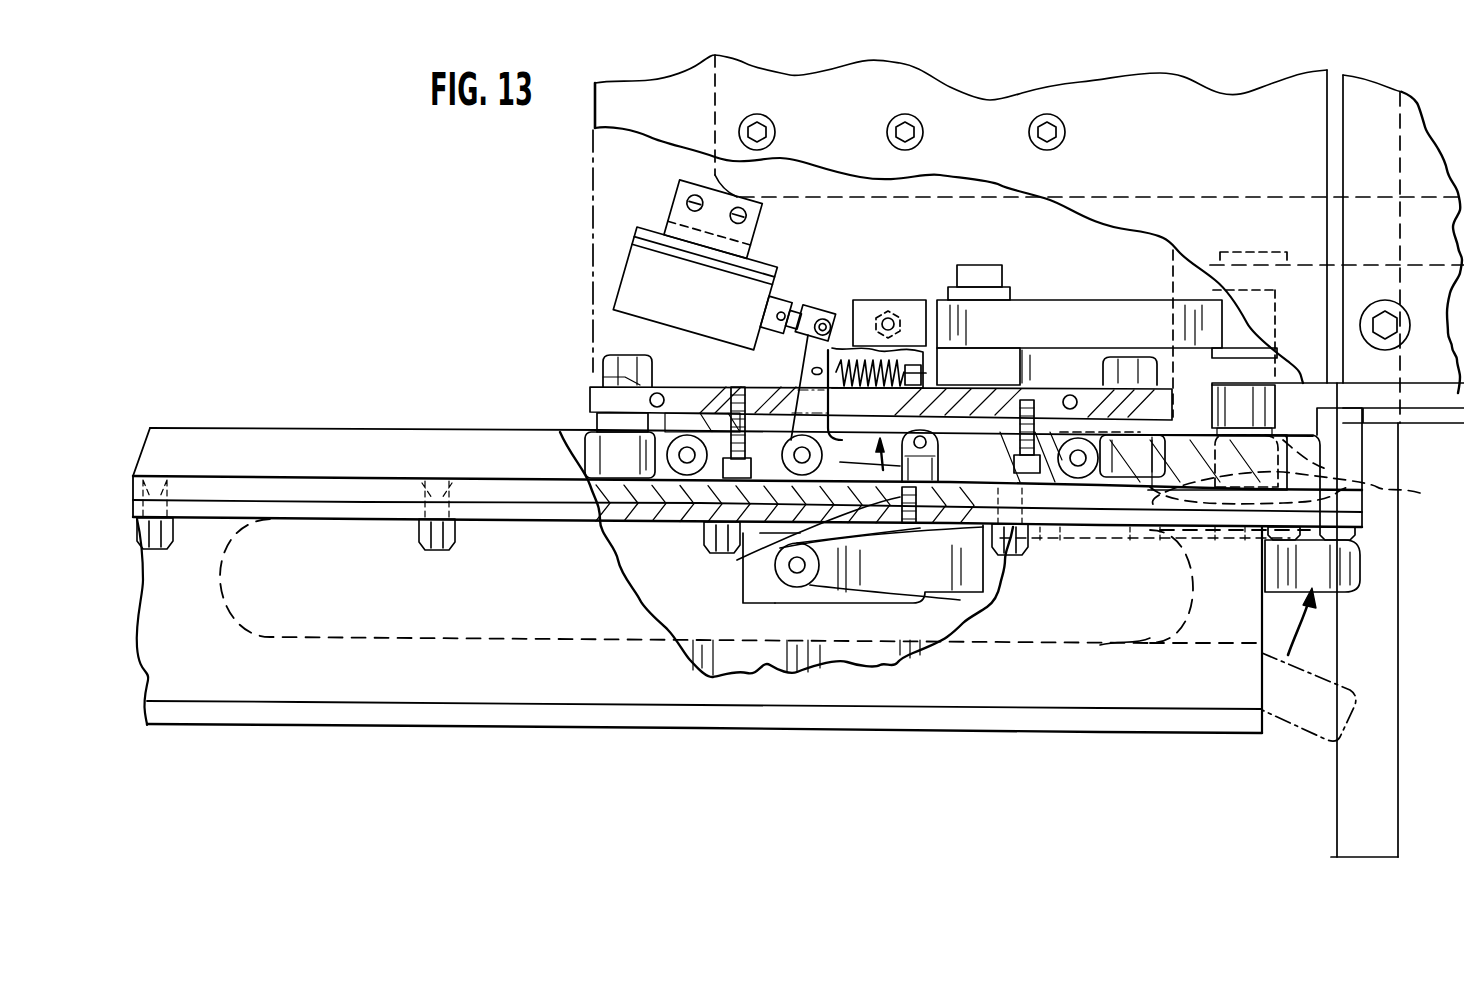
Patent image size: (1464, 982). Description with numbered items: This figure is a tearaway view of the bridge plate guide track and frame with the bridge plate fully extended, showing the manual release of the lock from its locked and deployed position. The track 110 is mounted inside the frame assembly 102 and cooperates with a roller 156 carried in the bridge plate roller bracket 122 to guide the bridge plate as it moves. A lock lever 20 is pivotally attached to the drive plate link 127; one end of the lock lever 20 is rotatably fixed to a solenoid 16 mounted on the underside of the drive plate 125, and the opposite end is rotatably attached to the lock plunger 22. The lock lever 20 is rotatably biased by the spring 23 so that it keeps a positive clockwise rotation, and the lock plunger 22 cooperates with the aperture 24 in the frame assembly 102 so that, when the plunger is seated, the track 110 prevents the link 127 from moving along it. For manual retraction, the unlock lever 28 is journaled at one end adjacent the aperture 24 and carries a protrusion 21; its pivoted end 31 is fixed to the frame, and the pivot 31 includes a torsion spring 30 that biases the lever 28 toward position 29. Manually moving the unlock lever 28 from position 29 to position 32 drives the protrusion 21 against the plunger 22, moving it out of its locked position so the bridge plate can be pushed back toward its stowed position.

The solenoid 16 is at (694, 309).
The lock lever 20 is at (810, 371).
The protrusion 21 is at (940, 485).
The lock plunger 22 is at (933, 490).
The spring 23 is at (834, 370).
The aperture 24 is at (737, 560).
The manual unlock lever 28 is at (916, 576).
The position 29 is at (1300, 728).
The torsion spring 30 is at (797, 573).
The pivoted end 31 is at (800, 568).
The position 32 is at (1363, 567).
The frame assembly 102 is at (1108, 748).
The track 110 is at (322, 490).
The bridge plate roller bracket 122 is at (1150, 334).
The drive plate 125 is at (1396, 178).
The drive plate link 127 is at (672, 385).
The roller 156 is at (1306, 476).